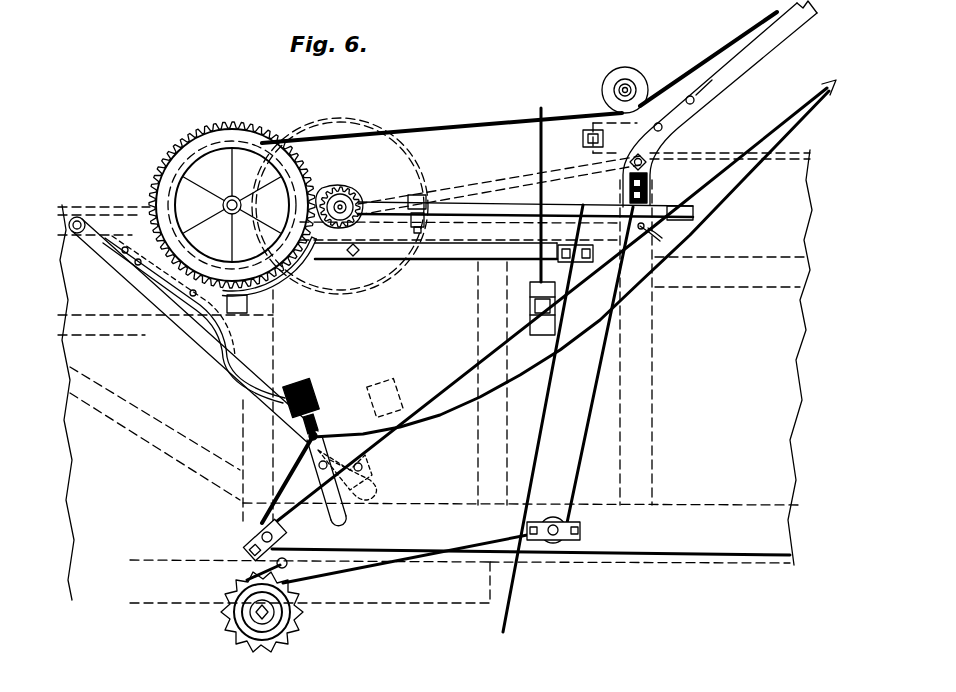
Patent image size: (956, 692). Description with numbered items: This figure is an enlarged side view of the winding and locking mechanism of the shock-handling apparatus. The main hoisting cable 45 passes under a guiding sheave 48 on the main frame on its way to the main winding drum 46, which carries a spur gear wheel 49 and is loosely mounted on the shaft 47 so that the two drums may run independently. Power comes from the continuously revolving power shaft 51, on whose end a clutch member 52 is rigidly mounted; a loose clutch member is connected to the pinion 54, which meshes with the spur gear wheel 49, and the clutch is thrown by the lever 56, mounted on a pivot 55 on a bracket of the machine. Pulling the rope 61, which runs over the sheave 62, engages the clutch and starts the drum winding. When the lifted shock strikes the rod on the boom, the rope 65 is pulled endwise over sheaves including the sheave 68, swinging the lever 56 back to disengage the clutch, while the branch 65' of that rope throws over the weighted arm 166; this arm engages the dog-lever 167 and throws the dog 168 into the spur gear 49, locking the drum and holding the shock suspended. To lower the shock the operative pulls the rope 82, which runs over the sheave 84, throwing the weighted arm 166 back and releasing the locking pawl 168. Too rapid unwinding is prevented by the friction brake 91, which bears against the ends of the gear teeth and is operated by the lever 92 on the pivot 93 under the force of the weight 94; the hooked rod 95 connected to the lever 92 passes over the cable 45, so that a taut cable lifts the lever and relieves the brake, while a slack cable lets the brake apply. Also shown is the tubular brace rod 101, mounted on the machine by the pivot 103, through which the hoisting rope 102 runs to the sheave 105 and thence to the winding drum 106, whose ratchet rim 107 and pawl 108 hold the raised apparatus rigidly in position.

The main hoisting cable 45 is at (463, 125).
The main winding drum 46 is at (234, 130).
The shaft 47 is at (226, 196).
The guiding sheave 48 is at (616, 68).
The spur gear wheel 49 is at (205, 128).
The power shaft 51 is at (353, 200).
The clutch member 52 is at (358, 208).
The pinion 54 is at (325, 195).
The pivot 55 is at (425, 200).
The lever 56 is at (489, 201).
The rope 61 is at (560, 380).
The sheave 62 is at (587, 241).
The rope 65 is at (554, 302).
The branch of rope 65' is at (571, 279).
The sheave 68 is at (652, 240).
The rope 82 is at (293, 460).
The sheave 84 is at (250, 528).
The friction brake 91 is at (283, 287).
The lever 92 is at (464, 262).
The pivot 93 is at (355, 258).
The weight 94 is at (528, 303).
The hooked rod 95 is at (544, 108).
The brace rod 101 is at (790, 42).
The hoisting rope 102 is at (600, 345).
The pivot 103 is at (632, 165).
The sheave 105 is at (553, 517).
The winding drum 106 is at (250, 635).
The ratchet rim 107 is at (230, 614).
The pawl 108 is at (265, 565).
The weighted arm 166 is at (316, 412).
The dog-lever 167 is at (208, 362).
The dog 168 is at (228, 316).